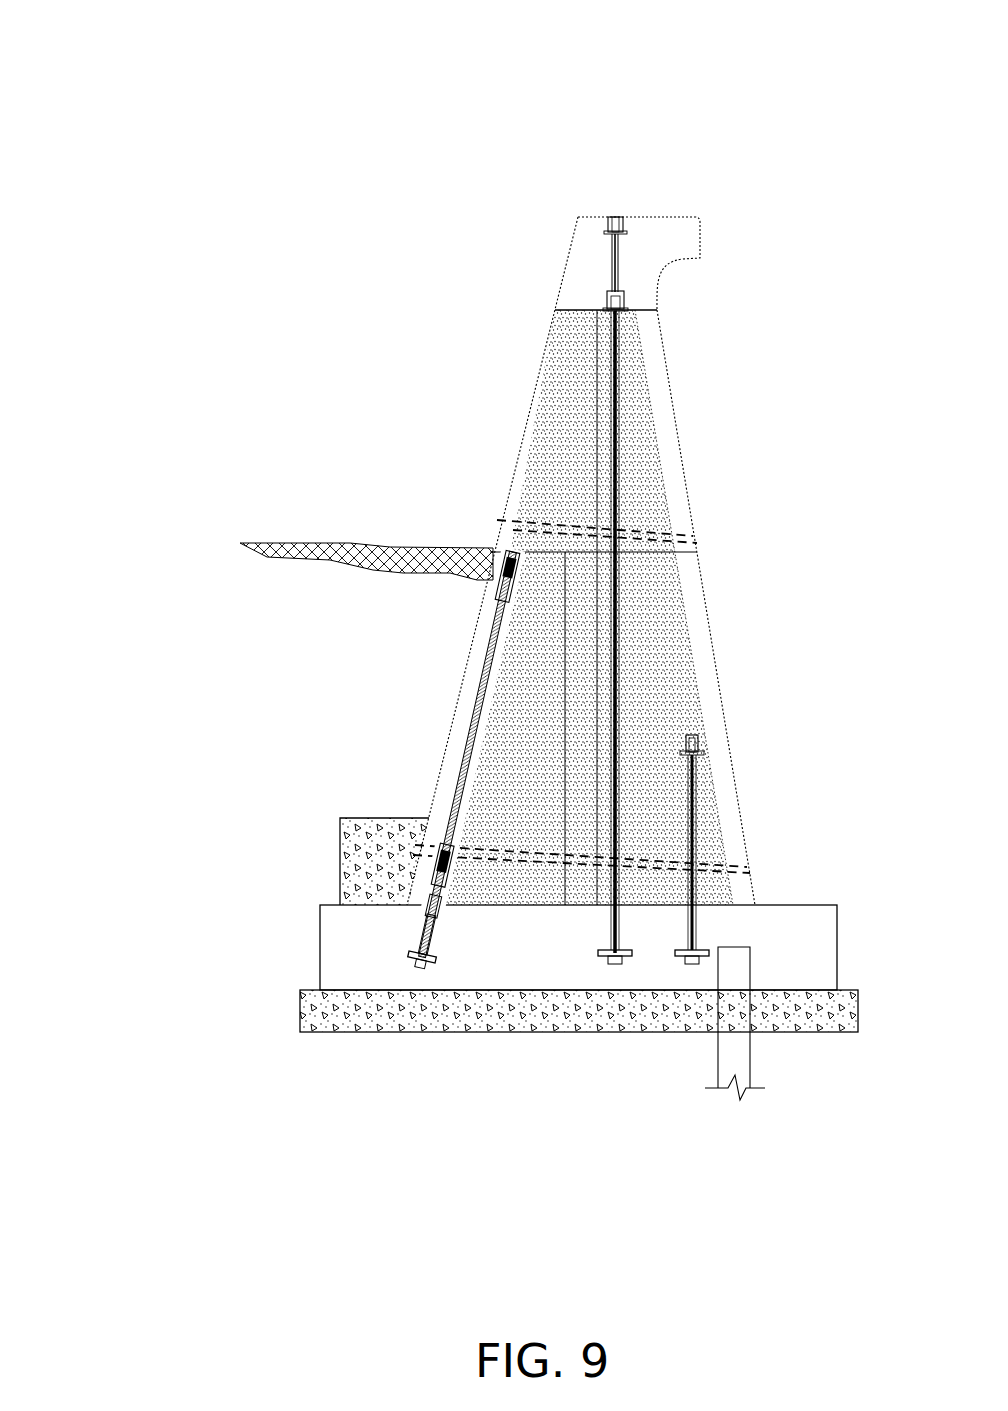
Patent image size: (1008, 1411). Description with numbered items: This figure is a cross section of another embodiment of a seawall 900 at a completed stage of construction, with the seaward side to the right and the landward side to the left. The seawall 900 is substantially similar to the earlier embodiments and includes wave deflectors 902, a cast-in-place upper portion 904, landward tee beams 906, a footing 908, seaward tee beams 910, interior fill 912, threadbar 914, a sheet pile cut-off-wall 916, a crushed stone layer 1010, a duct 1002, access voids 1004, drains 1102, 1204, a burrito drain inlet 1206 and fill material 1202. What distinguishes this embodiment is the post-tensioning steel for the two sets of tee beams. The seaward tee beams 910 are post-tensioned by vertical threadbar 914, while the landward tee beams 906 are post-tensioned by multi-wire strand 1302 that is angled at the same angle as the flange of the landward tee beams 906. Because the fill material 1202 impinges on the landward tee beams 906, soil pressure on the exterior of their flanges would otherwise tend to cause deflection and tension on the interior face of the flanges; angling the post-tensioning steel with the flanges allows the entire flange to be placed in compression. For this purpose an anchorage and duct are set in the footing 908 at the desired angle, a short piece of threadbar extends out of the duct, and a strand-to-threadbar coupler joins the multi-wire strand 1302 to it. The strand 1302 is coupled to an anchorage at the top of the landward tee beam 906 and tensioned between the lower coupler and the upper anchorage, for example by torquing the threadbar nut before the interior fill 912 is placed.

The seawall 900 is at (181, 47).
The wave deflectors 902 is at (558, 560).
The cast-in-place upper portion 904 is at (506, 402).
The landward tee beams 906 is at (460, 702).
The footing 908 is at (323, 976).
The seaward tee beams 910 is at (683, 512).
The interior fill 912 is at (670, 665).
The threadbar 914 is at (624, 398).
The sheet pile cut-off-wall 916 is at (718, 1063).
The duct 1002 is at (587, 590).
The access voids 1004 is at (696, 736).
The crushed stone layer 1010 is at (303, 1015).
The drain 1102 is at (430, 848).
The fill material 1202 is at (325, 548).
The drain 1204 is at (505, 530).
The burrito drain inlet 1206 is at (355, 817).
The multi-wire strand 1302 is at (457, 758).